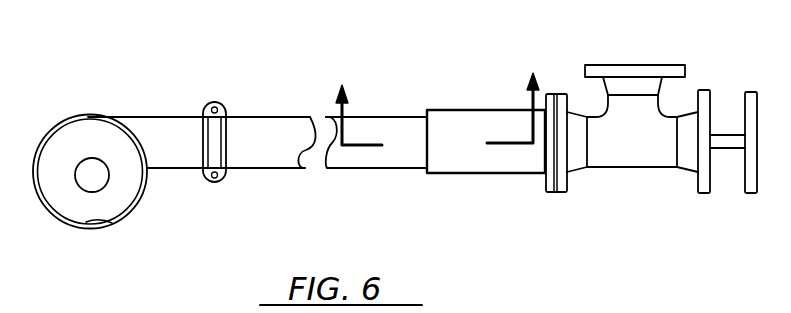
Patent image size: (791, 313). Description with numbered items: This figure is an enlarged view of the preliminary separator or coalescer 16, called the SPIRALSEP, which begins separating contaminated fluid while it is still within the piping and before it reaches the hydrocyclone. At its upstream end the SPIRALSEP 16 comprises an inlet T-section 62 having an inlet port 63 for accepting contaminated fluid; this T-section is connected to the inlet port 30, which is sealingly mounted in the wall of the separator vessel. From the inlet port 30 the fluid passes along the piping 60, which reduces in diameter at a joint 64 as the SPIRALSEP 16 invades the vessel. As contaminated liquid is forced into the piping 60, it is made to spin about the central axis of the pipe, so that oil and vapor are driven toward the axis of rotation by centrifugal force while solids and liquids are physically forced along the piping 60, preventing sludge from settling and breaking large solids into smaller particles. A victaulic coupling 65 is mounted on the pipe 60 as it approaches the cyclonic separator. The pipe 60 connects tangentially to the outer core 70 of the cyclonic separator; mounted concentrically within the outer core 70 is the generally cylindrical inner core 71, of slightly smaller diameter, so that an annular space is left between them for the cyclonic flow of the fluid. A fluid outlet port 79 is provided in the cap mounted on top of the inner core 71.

The preliminary separator or coalescer (SPIRALSEP) 16 is at (598, 22).
The inlet port 30 is at (545, 193).
The piping 60 is at (262, 111).
The inlet T-section 62 is at (658, 168).
The inlet port 63 is at (653, 65).
The joint 64 is at (424, 170).
The victaulic coupling 65 is at (208, 102).
The outer core 70 is at (65, 120).
The inner core 71 is at (112, 223).
The fluid outlet port 79 is at (98, 159).